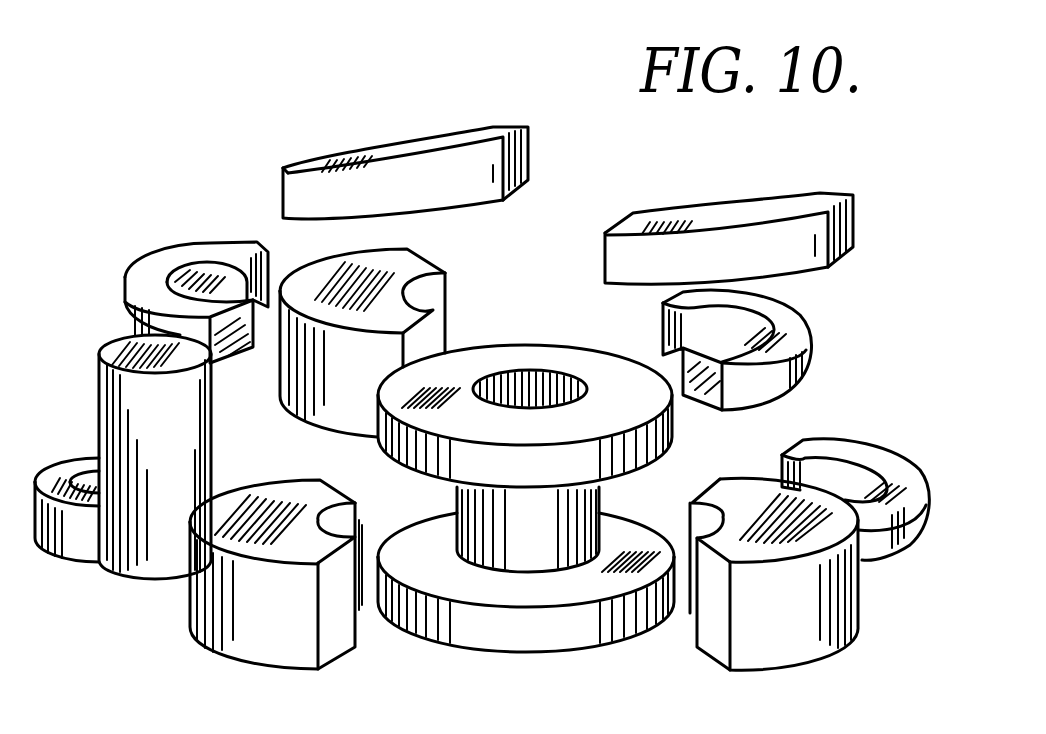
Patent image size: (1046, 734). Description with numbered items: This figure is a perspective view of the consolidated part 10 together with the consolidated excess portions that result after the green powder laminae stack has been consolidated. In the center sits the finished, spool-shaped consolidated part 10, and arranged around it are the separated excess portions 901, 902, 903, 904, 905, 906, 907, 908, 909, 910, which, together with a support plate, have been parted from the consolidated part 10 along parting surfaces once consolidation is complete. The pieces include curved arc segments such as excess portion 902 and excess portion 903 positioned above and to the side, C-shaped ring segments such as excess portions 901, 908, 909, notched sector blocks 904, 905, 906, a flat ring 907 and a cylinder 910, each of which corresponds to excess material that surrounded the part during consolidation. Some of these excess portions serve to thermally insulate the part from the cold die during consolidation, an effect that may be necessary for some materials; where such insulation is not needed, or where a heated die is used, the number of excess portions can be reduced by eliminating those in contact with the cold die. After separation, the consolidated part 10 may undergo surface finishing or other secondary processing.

The consolidated part 10 is at (511, 357).
The excess portion 901 is at (188, 255).
The excess portion 902 is at (733, 220).
The excess portion 903 is at (317, 157).
The excess portion 904 is at (418, 272).
The excess portion 905 is at (255, 645).
The excess portion 906 is at (780, 650).
The excess portion 907 is at (62, 470).
The excess portion 908 is at (772, 313).
The excess portion 909 is at (813, 450).
The excess portion 910 is at (115, 333).